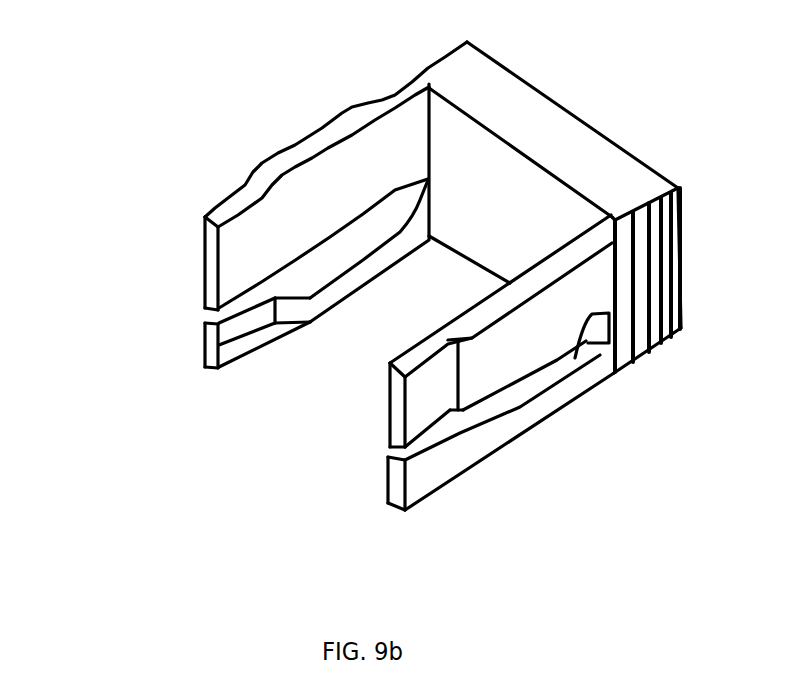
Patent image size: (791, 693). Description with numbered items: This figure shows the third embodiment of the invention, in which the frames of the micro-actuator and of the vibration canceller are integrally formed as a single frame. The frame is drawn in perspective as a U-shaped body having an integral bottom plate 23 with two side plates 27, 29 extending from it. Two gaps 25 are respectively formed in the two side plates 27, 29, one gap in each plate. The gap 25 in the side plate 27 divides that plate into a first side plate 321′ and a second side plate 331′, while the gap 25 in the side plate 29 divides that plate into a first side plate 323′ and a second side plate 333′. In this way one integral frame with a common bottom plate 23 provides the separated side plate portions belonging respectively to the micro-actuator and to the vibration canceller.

The bottom plate 23 is at (532, 138).
The side plate 27 is at (247, 210).
The side plate 29 is at (418, 409).
The first side plate 321′ is at (292, 227).
The second side plate 331′ is at (207, 340).
The first side plate 323′ is at (390, 420).
The second side plate 333′ is at (388, 493).
The gap 25 is at (348, 255).